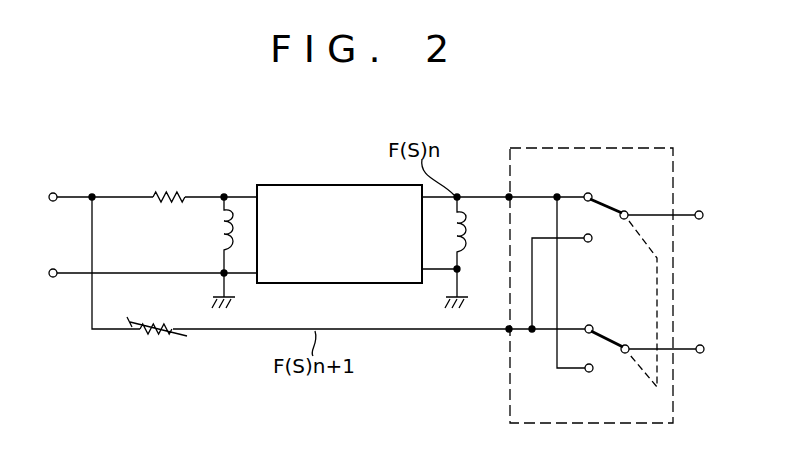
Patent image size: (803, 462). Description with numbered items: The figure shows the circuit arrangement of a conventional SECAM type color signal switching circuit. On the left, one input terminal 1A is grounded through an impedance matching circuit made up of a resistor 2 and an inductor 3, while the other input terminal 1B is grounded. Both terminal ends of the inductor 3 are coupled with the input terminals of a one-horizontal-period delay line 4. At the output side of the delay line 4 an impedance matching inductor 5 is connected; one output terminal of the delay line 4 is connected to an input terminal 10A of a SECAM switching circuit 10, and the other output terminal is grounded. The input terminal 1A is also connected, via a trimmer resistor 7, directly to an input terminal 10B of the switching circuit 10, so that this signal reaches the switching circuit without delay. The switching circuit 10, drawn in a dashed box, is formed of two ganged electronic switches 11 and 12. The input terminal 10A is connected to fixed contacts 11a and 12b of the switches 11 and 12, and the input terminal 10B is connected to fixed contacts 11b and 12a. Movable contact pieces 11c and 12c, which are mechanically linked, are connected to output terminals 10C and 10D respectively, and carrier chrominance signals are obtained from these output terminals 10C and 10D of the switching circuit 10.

The input terminal 1A is at (53, 193).
The input terminal 1B is at (53, 269).
The resistor 2 is at (164, 192).
The inductor 3 is at (220, 236).
The 1H delay line 4 is at (331, 185).
The impedance matching inductor 5 is at (466, 236).
The trimmer resistor 7 is at (157, 338).
The SECAM switching circuit 10 is at (600, 148).
The input terminal 10A is at (508, 196).
The input terminal 10B is at (508, 331).
The output terminal 10C is at (699, 211).
The output terminal 10D is at (700, 345).
The electronic switch 11 is at (602, 217).
The fixed contact 11a is at (588, 193).
The fixed contact 11b is at (586, 243).
The movable contact piece 11c is at (625, 211).
The electronic switch 12 is at (605, 351).
The fixed contact 12a is at (589, 325).
The fixed contact 12b is at (587, 373).
The movable contact piece 12c is at (625, 345).